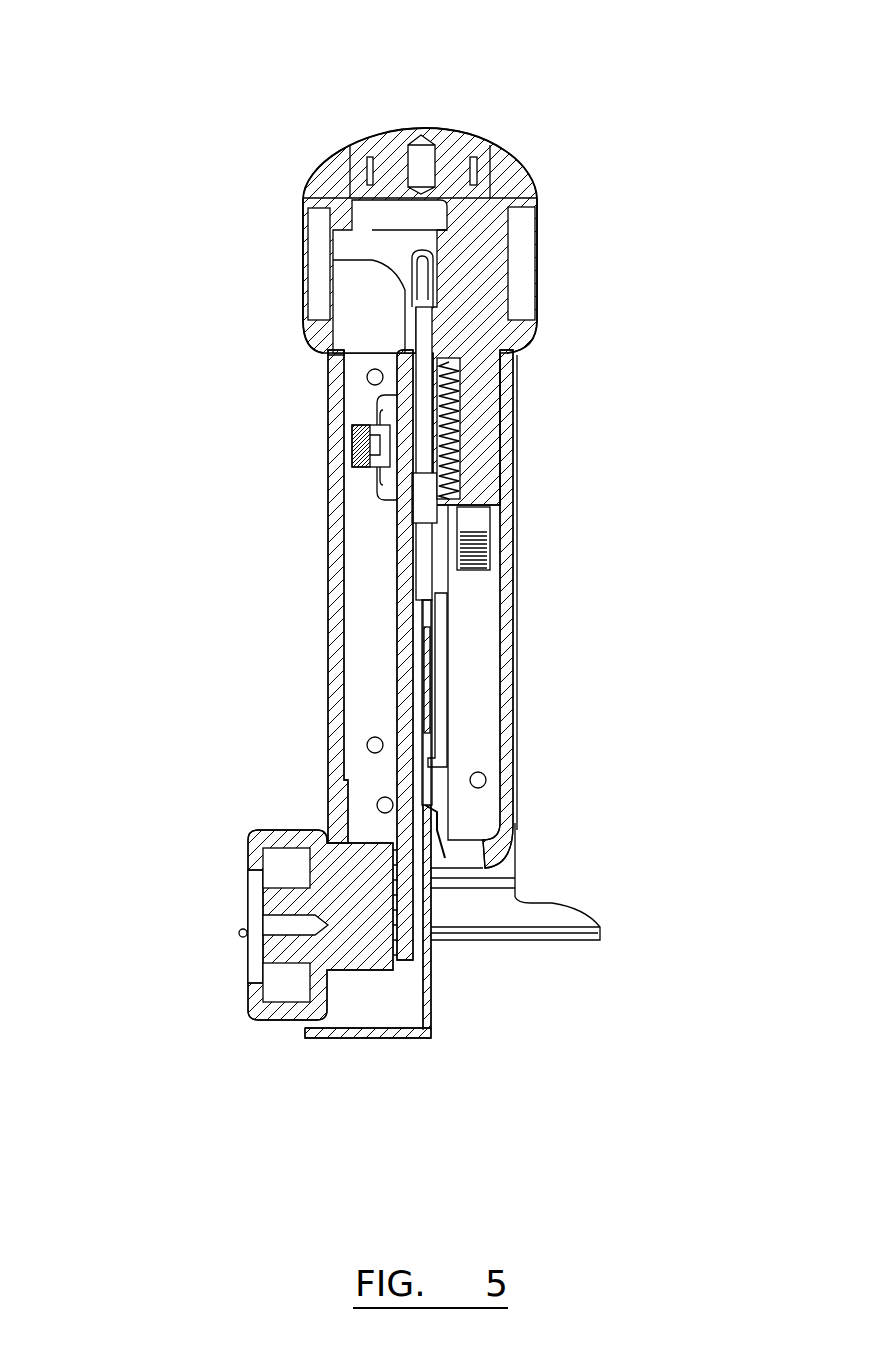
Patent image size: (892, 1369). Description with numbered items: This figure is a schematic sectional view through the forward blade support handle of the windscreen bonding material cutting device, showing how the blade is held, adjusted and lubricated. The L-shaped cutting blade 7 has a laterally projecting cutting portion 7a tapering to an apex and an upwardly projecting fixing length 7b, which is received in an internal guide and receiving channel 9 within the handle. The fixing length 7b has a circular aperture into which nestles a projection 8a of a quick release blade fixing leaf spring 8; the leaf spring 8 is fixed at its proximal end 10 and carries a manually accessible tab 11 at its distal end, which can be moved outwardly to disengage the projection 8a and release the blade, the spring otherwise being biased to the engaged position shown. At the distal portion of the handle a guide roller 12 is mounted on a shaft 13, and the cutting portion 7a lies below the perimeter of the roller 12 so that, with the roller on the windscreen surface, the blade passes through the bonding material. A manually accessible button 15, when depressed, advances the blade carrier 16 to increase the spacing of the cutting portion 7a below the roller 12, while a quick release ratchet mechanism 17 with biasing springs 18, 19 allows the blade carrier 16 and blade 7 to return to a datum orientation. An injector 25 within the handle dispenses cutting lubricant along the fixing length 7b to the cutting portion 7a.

The cutting blade 7 is at (444, 1006).
The cutting portion 7a is at (373, 1050).
The fixing length 7b is at (417, 725).
The quick release blade fixing leaf spring 8 is at (440, 697).
The projection 8a is at (440, 773).
The internal guide and receiving channel 9 is at (422, 670).
The proximal end 10 is at (447, 627).
The manually accessible tab 11 is at (447, 860).
The guide roller 12 is at (257, 853).
The shaft 13 is at (277, 953).
The manually accessible button 15 is at (457, 127).
The blade carrier 16 is at (397, 575).
The quick release ratchet mechanism 17 is at (462, 440).
The biasing spring 18 is at (350, 447).
The biasing spring 19 is at (490, 555).
The injector 25 is at (327, 350).